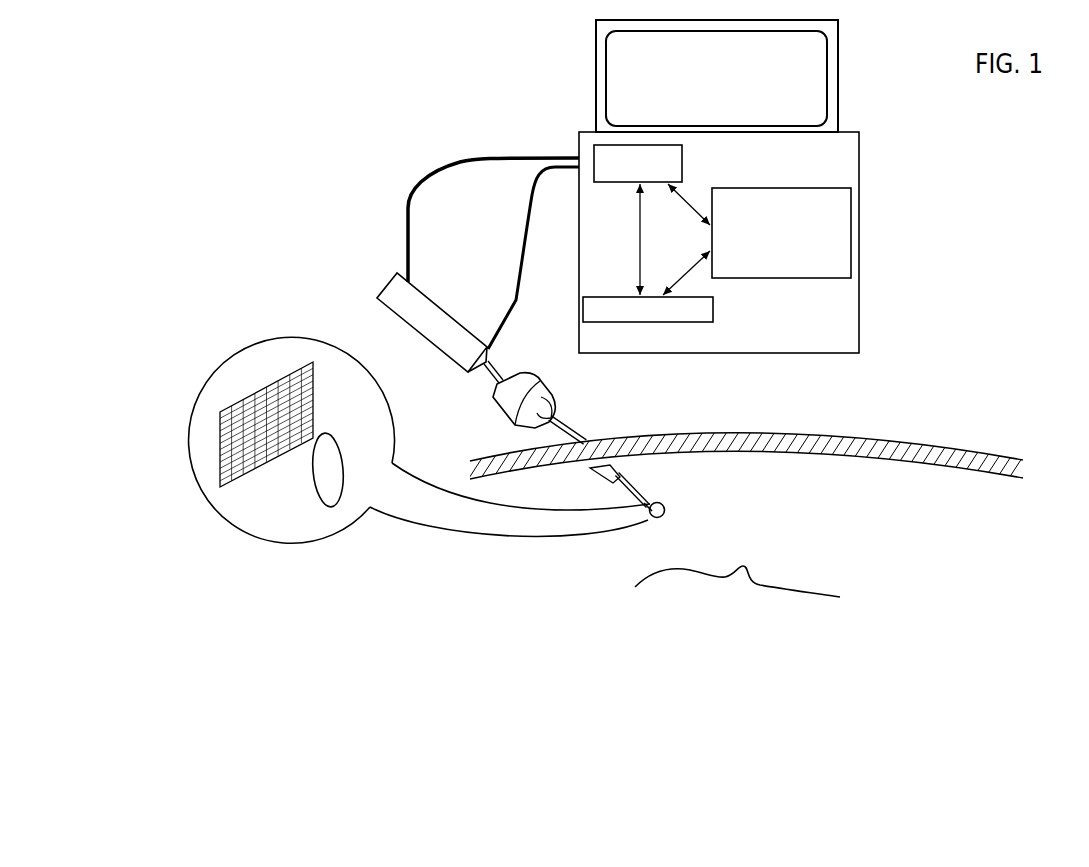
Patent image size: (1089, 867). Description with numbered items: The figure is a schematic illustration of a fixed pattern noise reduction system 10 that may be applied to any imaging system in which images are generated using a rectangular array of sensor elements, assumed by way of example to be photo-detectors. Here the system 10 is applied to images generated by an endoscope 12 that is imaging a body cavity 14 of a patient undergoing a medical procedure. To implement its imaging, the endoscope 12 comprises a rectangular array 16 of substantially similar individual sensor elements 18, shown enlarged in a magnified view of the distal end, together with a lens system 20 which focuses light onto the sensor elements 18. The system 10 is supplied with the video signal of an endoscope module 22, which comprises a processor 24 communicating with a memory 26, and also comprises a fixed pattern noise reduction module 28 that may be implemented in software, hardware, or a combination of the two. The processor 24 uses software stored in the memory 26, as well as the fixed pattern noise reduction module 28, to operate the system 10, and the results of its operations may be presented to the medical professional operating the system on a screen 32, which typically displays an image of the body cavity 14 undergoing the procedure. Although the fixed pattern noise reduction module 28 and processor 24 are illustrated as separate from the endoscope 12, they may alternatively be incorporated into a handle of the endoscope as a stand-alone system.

The fixed pattern noise reduction system 10 is at (362, 232).
The endoscope 12 is at (392, 312).
The body cavity 14 is at (717, 550).
The rectangular array 16 is at (220, 465).
The sensor elements 18 is at (313, 378).
The lens system 20 is at (338, 499).
The endoscope module 22 is at (618, 353).
The processor 24 is at (583, 310).
The memory 26 is at (594, 150).
The fixed pattern noise reduction module 28 is at (851, 233).
The screen 32 is at (838, 120).